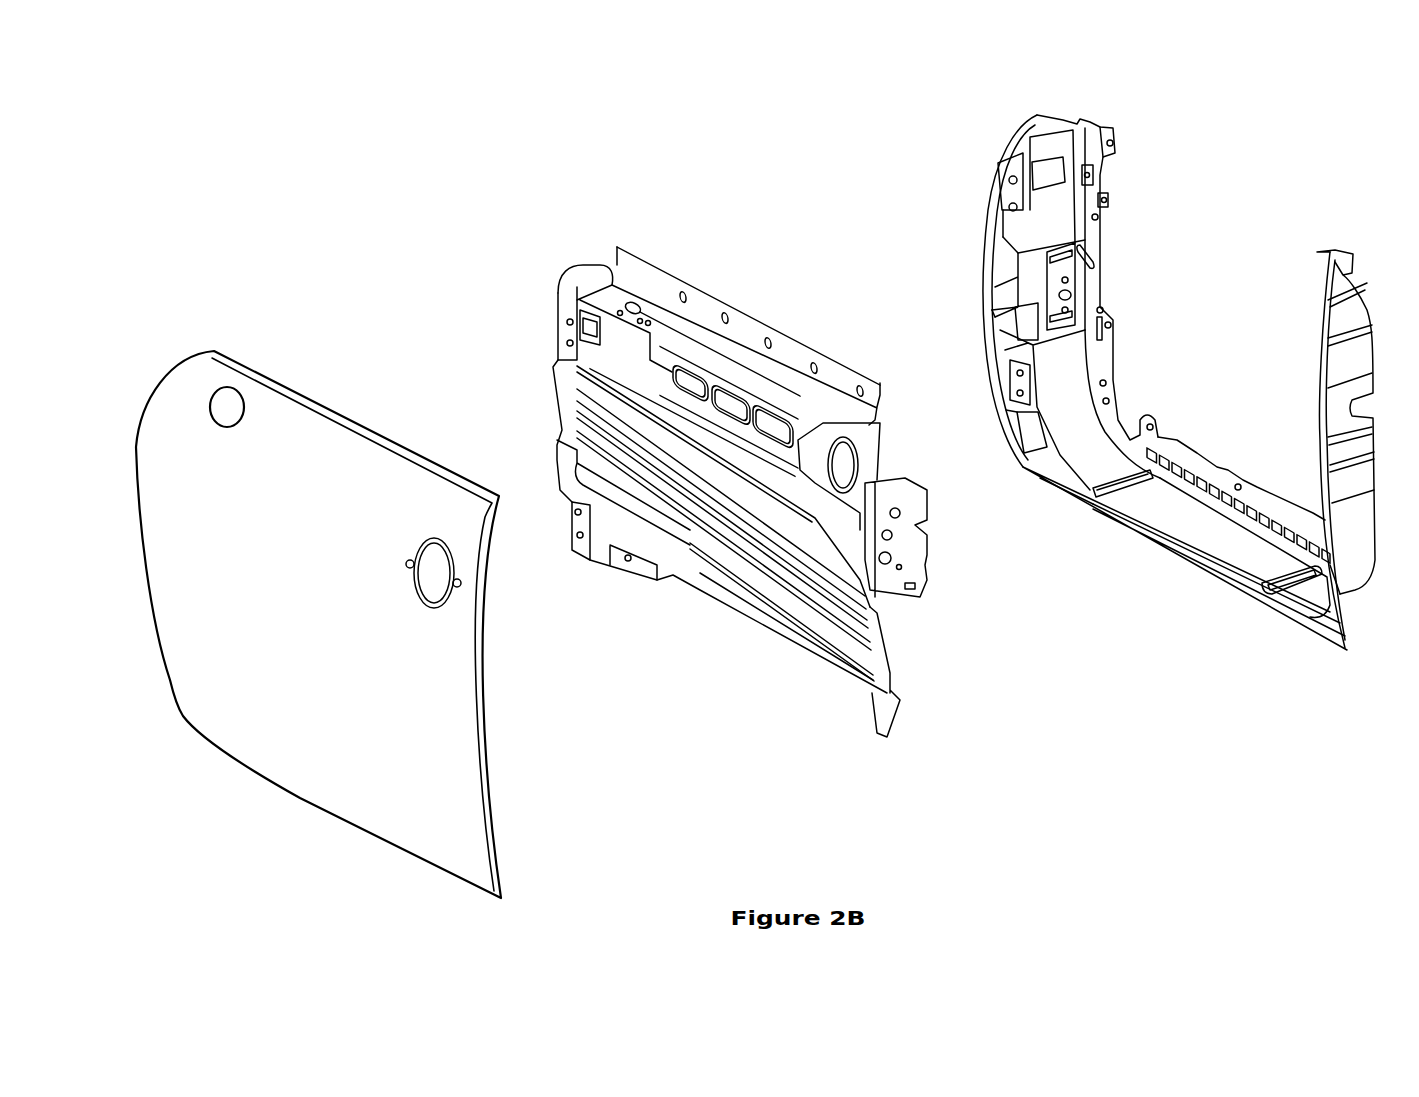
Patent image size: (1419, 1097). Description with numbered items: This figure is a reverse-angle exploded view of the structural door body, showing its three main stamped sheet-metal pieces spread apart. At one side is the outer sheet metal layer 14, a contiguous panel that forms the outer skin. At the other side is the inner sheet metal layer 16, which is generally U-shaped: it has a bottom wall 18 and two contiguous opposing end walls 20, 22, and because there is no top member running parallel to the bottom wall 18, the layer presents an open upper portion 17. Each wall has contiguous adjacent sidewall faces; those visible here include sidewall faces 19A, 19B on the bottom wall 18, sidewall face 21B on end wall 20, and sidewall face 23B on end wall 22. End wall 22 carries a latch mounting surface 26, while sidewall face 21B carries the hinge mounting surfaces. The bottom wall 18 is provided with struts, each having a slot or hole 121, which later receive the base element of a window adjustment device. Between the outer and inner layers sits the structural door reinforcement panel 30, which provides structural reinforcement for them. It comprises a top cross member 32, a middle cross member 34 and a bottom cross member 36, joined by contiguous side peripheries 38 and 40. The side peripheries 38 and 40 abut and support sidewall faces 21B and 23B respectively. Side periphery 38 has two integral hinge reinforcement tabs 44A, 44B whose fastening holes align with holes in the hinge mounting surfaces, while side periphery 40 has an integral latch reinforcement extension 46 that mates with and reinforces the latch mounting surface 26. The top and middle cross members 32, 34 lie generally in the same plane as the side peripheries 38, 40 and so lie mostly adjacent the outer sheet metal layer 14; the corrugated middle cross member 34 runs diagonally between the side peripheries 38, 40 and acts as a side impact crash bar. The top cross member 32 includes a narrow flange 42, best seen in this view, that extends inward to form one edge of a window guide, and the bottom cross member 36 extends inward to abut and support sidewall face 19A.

The outer sheet metal layer 14 is at (292, 622).
The inner sheet metal layer 16 is at (1086, 114).
The open upper portion 17 is at (1327, 275).
The bottom wall 18 is at (1218, 543).
The sidewall face 19A is at (1188, 456).
The sidewall face 19B is at (1150, 548).
The end wall 20 is at (1067, 235).
The sidewall face 21B is at (1005, 263).
The end wall 22 is at (1352, 447).
The sidewall face 23B is at (1325, 618).
The latch mounting surface 26 is at (1357, 380).
The structural door reinforcement panel 30 is at (731, 259).
The top cross member 32 is at (830, 353).
The middle cross member 34 is at (735, 503).
The bottom cross member 36 is at (737, 610).
The side periphery 38 is at (559, 426).
The side periphery 40 is at (893, 635).
The narrow flange 42 is at (740, 325).
The hinge reinforcement tab 44A is at (565, 333).
The hinge reinforcement tab 44B is at (573, 518).
The latch reinforcement extension 46 is at (905, 512).
The slot or hole 121 is at (1093, 500).